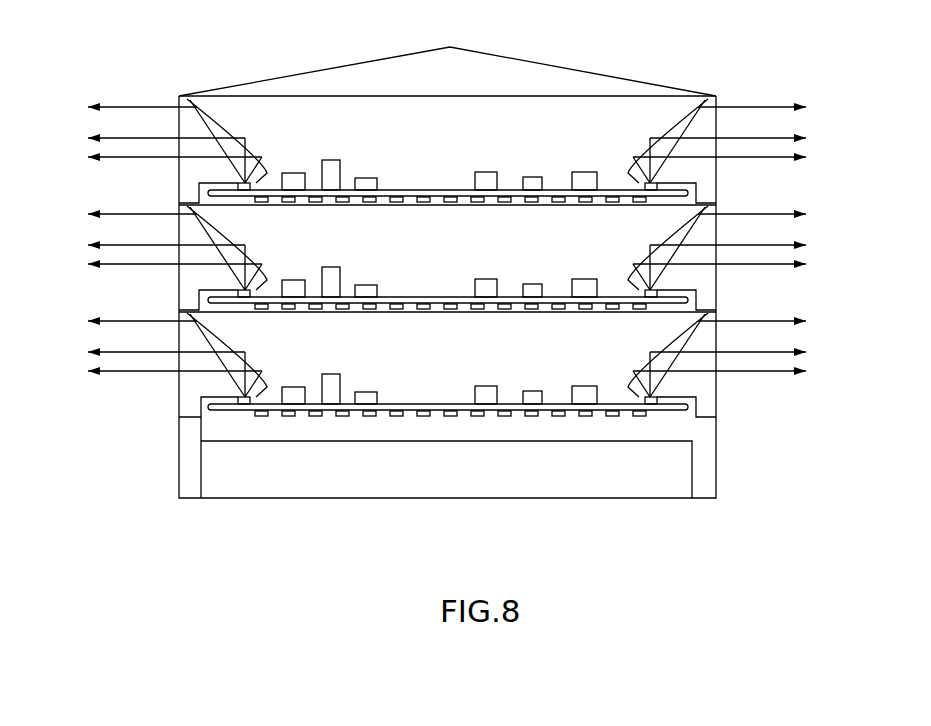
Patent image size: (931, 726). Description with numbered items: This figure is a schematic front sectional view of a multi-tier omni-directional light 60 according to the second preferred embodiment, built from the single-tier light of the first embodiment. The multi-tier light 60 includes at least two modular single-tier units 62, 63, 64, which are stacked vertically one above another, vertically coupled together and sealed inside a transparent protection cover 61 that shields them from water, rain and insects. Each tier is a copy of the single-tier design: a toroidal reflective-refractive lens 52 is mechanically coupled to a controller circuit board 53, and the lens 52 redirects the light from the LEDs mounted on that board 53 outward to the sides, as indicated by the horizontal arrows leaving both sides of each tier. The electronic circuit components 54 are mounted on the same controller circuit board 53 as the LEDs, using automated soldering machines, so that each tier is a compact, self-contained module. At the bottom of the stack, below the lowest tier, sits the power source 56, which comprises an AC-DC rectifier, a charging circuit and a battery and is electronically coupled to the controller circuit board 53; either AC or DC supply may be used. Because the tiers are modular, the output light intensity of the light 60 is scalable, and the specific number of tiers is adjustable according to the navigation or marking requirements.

The toroidal reflective-refractive lens 52 is at (250, 378).
The controller circuit board 53 is at (398, 395).
The electronic circuit components 54 is at (490, 395).
The power source 56 is at (418, 472).
The multi-tier omni-directional light 60 is at (262, 63).
The transparent protection cover 61 is at (178, 399).
The modular single-tier unit 62 is at (588, 140).
The modular single-tier unit 63 is at (597, 245).
The modular single-tier unit 64 is at (447, 350).